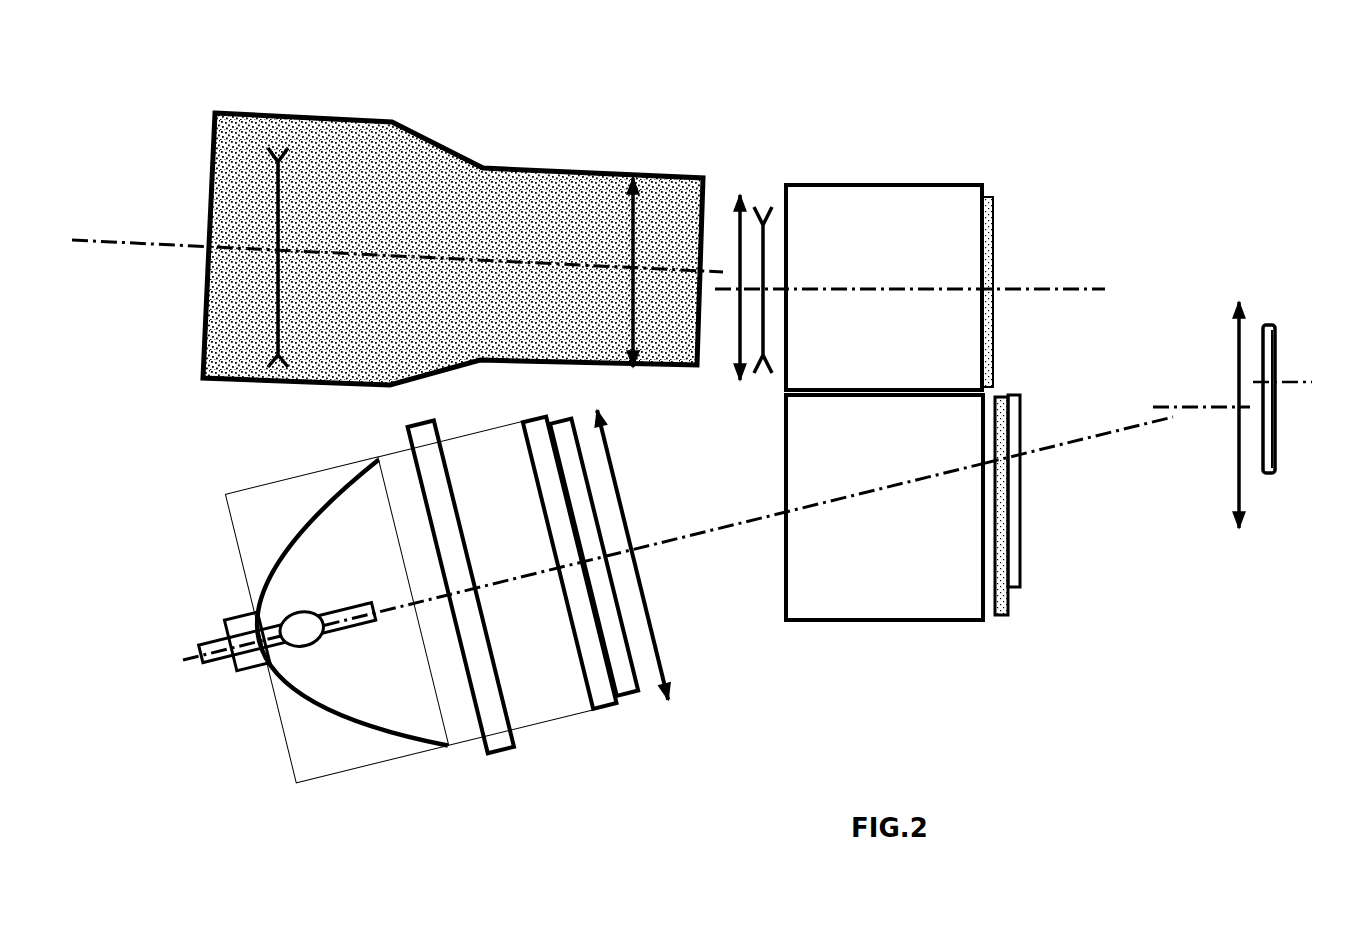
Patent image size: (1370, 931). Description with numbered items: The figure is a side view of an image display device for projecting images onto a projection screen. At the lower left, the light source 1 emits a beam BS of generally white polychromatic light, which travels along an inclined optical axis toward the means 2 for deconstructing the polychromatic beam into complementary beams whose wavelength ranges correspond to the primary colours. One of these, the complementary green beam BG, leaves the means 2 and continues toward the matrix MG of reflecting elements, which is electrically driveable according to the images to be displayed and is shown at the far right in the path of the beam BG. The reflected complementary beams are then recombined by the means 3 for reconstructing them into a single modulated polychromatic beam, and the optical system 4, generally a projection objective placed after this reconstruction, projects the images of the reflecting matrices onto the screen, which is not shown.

The light source 1 is at (687, 713).
The means for deconstructing the polychromatic light beam 2 is at (1005, 645).
The means for reconstructing the reflected complementary beams 3 is at (894, 164).
The optical system 4 is at (460, 119).
The beam of polychromatic light BS is at (732, 522).
The complementary green light beam BG is at (1082, 437).
The matrix of reflecting elements for green MG is at (1270, 470).